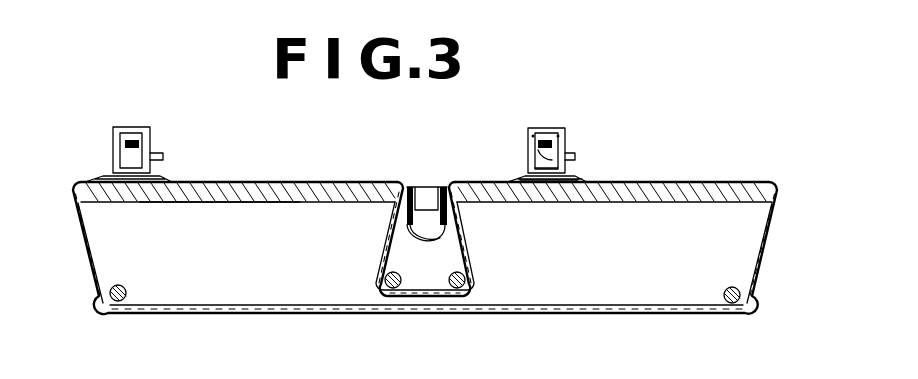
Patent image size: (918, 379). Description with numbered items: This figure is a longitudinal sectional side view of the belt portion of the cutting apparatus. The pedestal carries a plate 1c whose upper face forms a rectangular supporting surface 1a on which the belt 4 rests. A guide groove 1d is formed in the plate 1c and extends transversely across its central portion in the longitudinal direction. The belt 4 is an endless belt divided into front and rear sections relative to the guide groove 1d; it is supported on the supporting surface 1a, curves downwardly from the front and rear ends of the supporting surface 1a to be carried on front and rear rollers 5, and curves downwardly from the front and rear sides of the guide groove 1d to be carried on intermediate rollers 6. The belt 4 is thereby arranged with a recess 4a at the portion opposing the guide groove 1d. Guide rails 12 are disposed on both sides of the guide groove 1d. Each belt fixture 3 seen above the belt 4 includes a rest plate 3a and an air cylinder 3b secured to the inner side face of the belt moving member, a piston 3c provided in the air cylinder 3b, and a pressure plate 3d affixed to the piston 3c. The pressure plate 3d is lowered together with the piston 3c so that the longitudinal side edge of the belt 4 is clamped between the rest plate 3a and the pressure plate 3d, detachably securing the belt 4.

The supporting surface 1a is at (103, 176).
The plate 1c is at (245, 203).
The guide groove 1d is at (430, 186).
The belt fixture 3 is at (130, 142).
The rest plate 3a is at (565, 201).
The air cylinder 3b is at (548, 136).
The piston 3c is at (540, 157).
The pressure plate 3d is at (530, 168).
The belt 4 is at (233, 181).
The recess 4a is at (467, 254).
The front and rear rollers 5 is at (122, 313).
The intermediate rollers 6 is at (436, 297).
The guide rails 12 is at (412, 246).